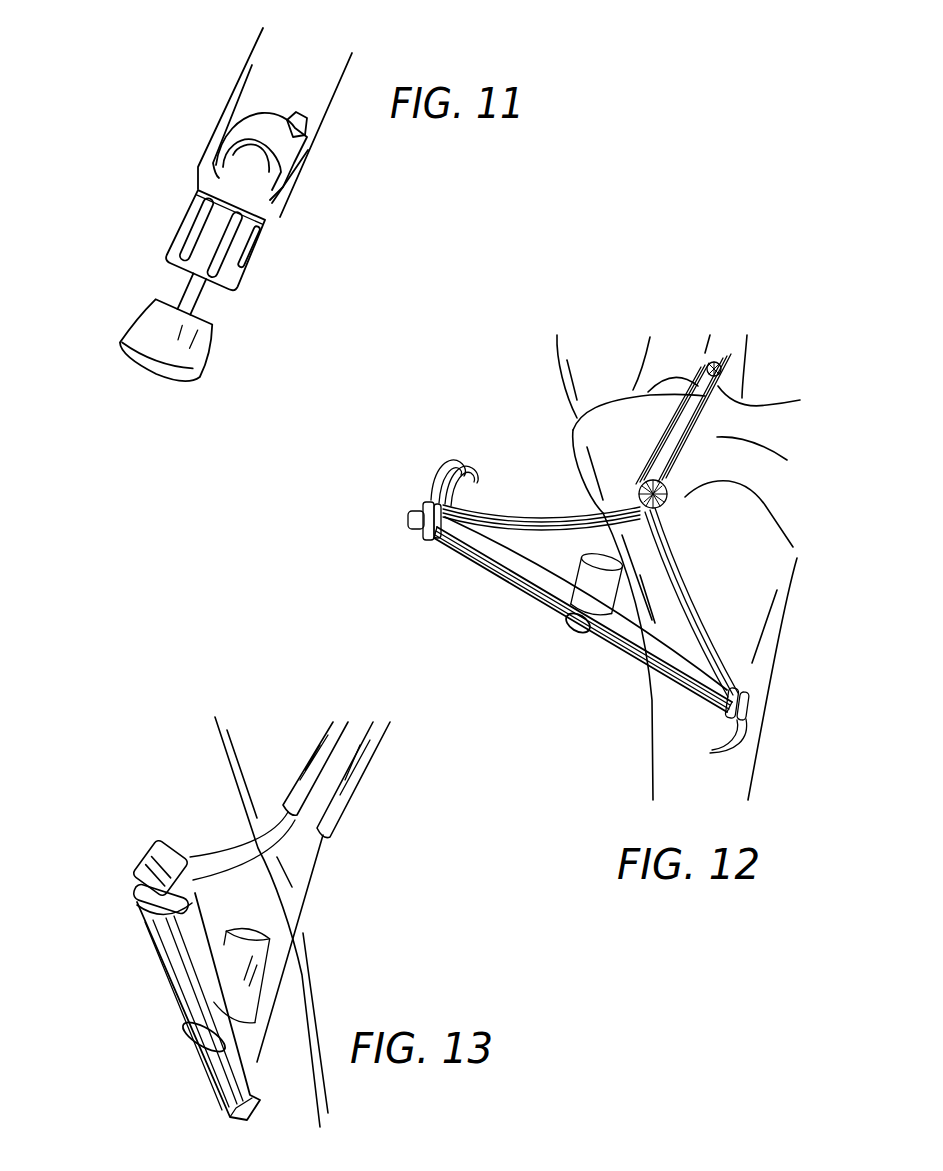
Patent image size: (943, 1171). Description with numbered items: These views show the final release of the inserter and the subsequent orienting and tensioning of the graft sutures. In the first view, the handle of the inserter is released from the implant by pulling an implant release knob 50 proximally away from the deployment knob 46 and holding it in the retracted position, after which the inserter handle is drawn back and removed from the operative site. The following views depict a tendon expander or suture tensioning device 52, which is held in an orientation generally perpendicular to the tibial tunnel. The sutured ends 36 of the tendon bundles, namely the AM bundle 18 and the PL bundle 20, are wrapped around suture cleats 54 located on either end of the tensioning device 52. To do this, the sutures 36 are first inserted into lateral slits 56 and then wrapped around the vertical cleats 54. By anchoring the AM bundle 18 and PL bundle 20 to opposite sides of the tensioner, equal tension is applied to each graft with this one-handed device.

In FIG. 13, the AM bundle 18 is at (317, 747).
In FIG. 13, the PL bundle 20 is at (367, 757).
In FIG. 12, the sutures 36 is at (442, 470).
In FIG. 13, the sutures 36 is at (213, 853).
In FIG. 11, the deployment knob 46 is at (237, 248).
In FIG. 11, the implant release knob 50 is at (120, 340).
In FIG. 12, the suture tensioning device 52 is at (502, 578).
In FIG. 13, the suture tensioning device 52 is at (177, 988).
In FIG. 12, the suture cleats 54 is at (420, 508).
In FIG. 13, the lateral slits 56 is at (137, 863).